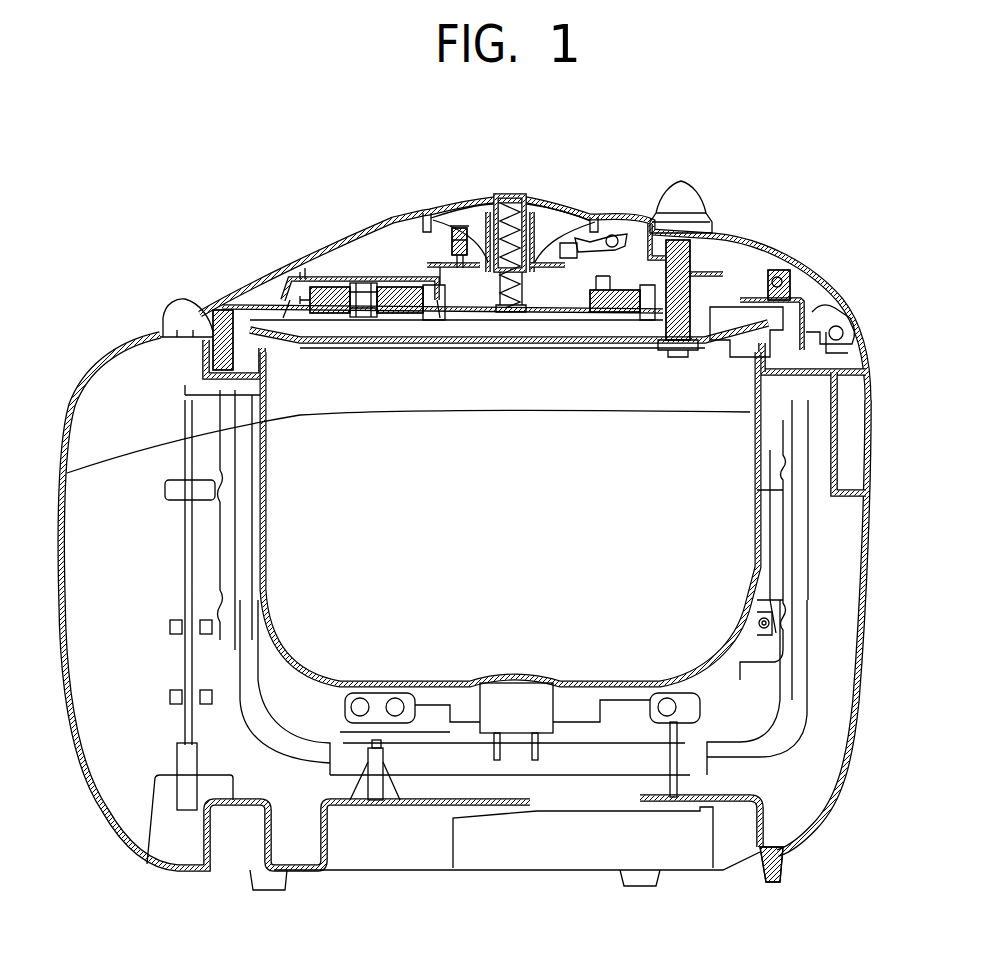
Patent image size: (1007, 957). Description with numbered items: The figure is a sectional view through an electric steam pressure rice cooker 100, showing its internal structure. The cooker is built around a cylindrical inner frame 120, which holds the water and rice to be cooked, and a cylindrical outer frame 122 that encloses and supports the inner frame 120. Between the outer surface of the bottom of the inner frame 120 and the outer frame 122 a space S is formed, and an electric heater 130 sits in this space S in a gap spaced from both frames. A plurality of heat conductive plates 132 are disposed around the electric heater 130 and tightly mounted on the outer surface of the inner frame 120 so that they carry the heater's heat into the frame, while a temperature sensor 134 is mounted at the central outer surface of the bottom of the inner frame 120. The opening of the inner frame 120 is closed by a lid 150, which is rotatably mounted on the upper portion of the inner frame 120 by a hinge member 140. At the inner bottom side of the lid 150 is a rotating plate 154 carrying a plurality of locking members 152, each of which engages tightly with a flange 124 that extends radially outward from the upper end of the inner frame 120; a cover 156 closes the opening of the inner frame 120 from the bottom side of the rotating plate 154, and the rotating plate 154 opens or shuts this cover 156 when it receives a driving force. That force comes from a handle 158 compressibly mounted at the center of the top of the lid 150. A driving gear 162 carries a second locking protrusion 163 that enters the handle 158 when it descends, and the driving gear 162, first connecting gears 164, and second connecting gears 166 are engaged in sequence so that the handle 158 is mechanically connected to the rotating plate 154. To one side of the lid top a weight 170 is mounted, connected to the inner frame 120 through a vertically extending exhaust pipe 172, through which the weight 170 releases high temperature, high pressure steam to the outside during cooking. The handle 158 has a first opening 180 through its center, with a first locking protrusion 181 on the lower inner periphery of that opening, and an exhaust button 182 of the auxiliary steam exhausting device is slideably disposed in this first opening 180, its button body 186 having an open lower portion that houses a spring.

The electric steam pressure rice cooker 100 is at (524, 496).
The cylindrical inner frame 120 is at (763, 440).
The cylindrical outer frame 122 is at (862, 599).
The flange 124 is at (206, 310).
The electric heater 130 is at (683, 700).
The heat conductive plates 132 is at (750, 633).
The temperature sensor 134 is at (533, 716).
The hinge member 140 is at (845, 328).
The lid 150 is at (836, 281).
The locking members 152 is at (183, 300).
The rotating plate 154 is at (705, 313).
The cover 156 is at (757, 376).
The handle 158 is at (563, 207).
The driving gear 162 is at (455, 282).
The second locking protrusion 163 is at (583, 238).
The first connecting gears 164 is at (388, 300).
The second connecting gears 166 is at (295, 290).
The weight 170 is at (673, 193).
The exhaust pipe 172 is at (688, 272).
The first opening 180 is at (497, 193).
The first locking protrusion 181 is at (490, 262).
The exhaust button 182 is at (511, 183).
The button body 186 is at (550, 214).
The space S is at (807, 750).